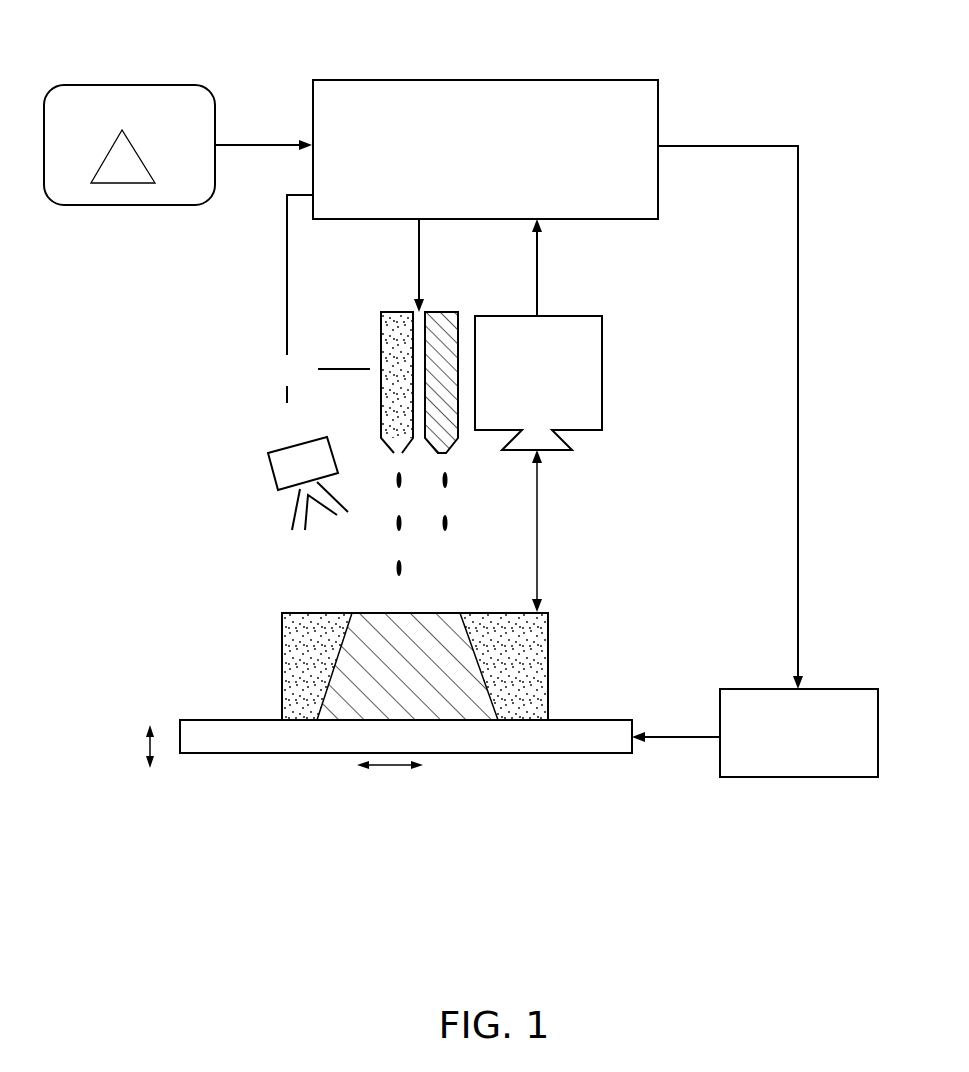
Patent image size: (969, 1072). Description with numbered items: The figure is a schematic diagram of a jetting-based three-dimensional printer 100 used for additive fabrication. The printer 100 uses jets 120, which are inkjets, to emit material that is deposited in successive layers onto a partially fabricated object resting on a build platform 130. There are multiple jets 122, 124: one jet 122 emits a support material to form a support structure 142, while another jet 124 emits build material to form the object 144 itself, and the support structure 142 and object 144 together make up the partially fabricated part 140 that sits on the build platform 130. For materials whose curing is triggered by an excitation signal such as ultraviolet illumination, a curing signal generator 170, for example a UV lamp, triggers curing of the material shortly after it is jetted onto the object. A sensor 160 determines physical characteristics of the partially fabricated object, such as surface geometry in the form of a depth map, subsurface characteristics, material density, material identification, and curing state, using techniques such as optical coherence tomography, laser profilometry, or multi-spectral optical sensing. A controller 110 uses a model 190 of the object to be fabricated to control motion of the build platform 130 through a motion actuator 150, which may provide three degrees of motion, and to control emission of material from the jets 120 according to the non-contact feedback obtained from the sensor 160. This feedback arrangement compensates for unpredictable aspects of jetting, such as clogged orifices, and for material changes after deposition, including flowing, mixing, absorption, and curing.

The 3D printer 100 is at (338, 927).
The controller 110 is at (481, 80).
The jets 120 is at (367, 360).
The jet 122 is at (380, 343).
The jet 124 is at (438, 312).
The build platform 130 is at (226, 720).
The part 140 is at (381, 629).
The support structure 142 is at (282, 647).
The object 144 is at (335, 688).
The motion actuator 150 is at (813, 689).
The sensor 160 is at (602, 376).
The curing signal generator 170 is at (268, 471).
The model 190 is at (119, 84).